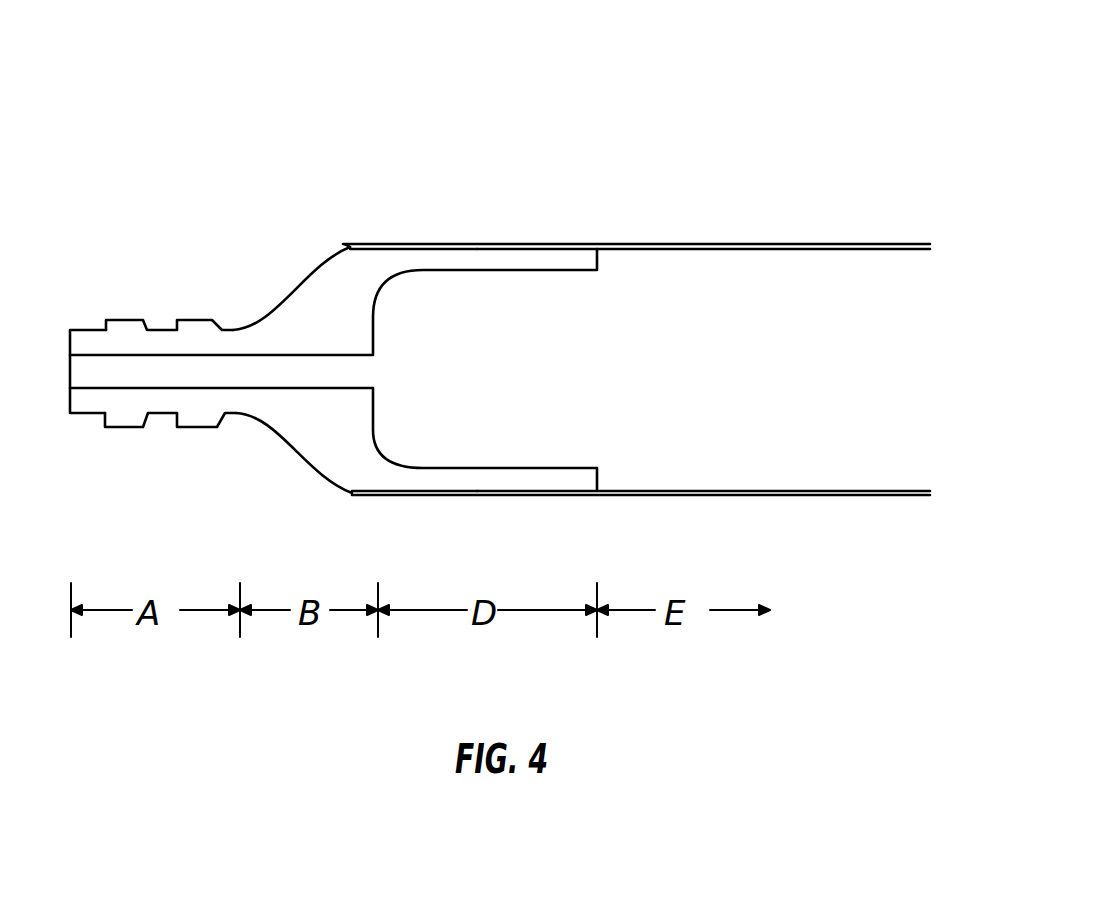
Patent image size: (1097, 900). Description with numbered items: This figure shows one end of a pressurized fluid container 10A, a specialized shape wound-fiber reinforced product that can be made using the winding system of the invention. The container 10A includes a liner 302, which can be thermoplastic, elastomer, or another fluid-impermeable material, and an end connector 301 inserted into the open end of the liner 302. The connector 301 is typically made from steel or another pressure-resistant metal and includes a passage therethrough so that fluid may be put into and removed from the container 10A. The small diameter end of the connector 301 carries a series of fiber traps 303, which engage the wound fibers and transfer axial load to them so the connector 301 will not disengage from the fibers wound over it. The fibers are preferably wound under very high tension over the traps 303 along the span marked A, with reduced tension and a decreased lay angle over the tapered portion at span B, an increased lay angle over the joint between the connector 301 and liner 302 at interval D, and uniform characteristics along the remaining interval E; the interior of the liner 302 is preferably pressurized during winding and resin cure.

The pressurized fluid container 10A is at (678, 106).
The end connector 301 is at (290, 440).
The liner 302 is at (727, 243).
The fiber traps 303 is at (117, 320).